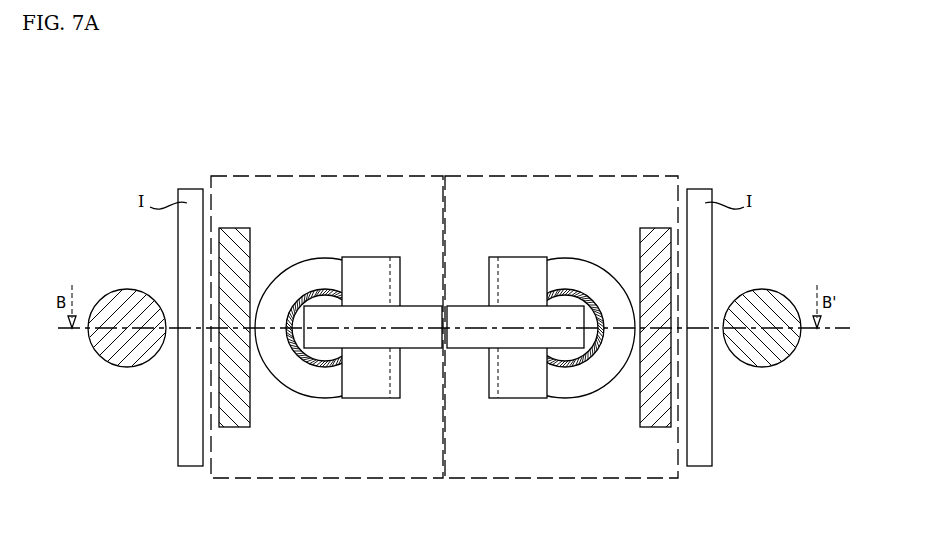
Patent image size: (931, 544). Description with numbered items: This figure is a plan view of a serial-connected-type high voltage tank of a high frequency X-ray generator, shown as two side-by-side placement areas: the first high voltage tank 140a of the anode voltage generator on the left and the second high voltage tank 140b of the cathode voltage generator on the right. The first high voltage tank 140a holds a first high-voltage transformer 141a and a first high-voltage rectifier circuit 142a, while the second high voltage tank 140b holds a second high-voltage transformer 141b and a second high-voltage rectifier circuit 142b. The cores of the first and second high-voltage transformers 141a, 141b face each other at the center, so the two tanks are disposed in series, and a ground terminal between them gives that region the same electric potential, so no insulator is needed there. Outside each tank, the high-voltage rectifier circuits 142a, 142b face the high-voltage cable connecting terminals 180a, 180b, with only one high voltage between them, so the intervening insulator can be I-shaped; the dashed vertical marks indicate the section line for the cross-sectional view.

The first high voltage tank 140a is at (230, 175).
The second high voltage tank 140b is at (660, 175).
The first high-voltage transformer 141a is at (365, 315).
The second high-voltage transformer 141b is at (525, 315).
The first high-voltage rectifier circuit 142a is at (246, 407).
The second high-voltage rectifier circuit 142b is at (644, 407).
The high-voltage cable connecting terminal 180a is at (103, 348).
The high-voltage cable connecting terminal 180b is at (786, 348).